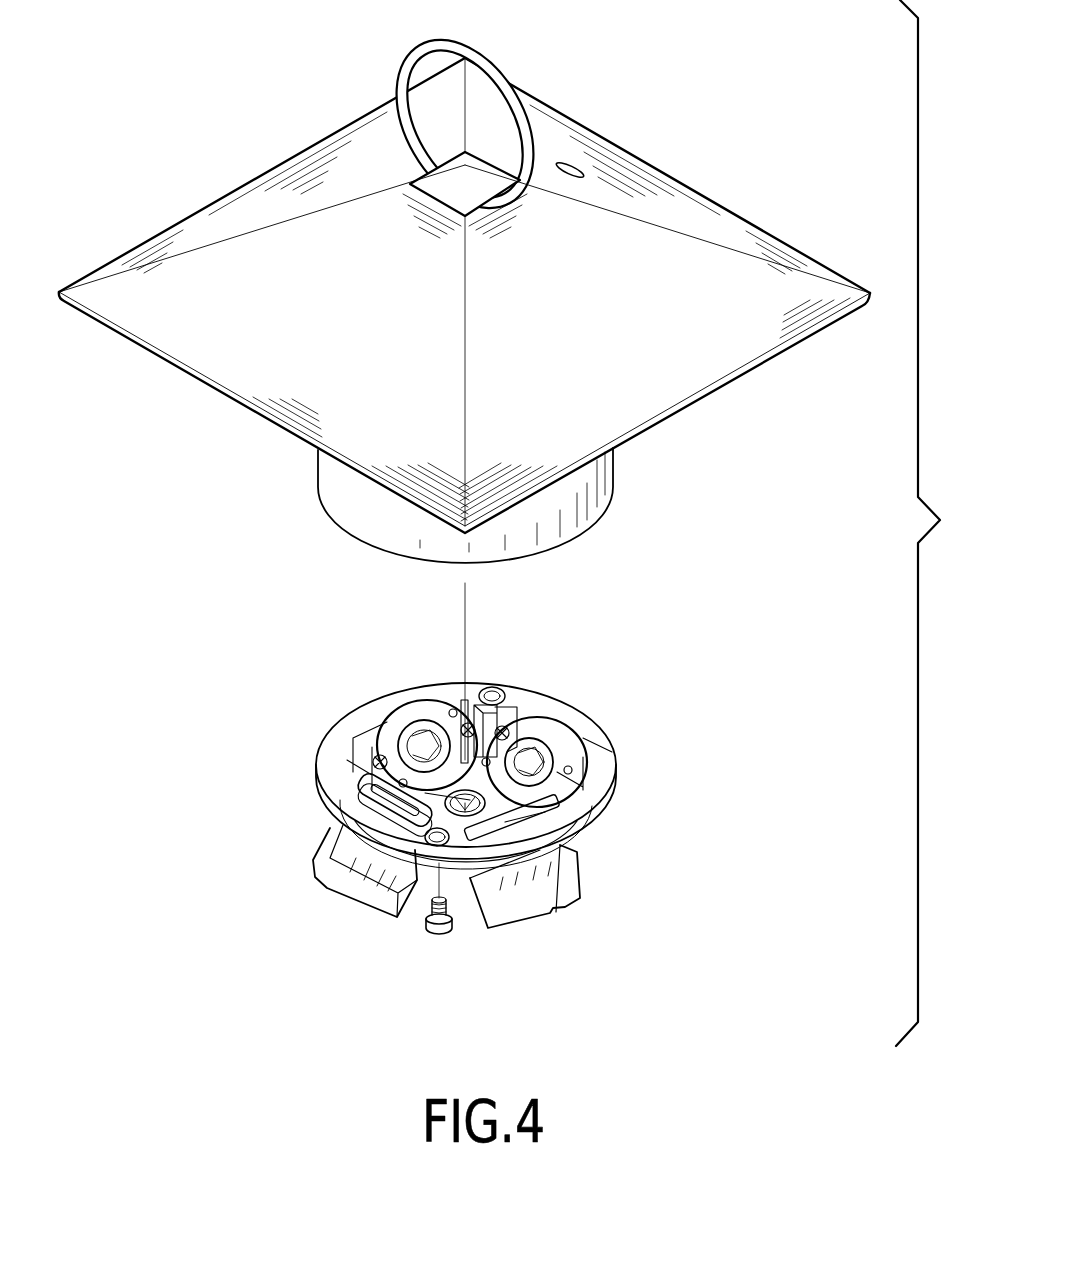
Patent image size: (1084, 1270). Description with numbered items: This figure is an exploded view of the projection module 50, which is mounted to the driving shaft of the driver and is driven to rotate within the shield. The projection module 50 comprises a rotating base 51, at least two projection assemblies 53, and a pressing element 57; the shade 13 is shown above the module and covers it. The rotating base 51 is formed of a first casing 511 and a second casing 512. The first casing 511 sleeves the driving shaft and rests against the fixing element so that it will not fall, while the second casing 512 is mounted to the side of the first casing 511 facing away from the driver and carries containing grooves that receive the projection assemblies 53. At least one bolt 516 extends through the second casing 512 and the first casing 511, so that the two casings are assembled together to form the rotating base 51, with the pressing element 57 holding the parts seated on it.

The lamp shade 13 is at (738, 161).
The projection module 50 is at (464, 507).
The rotating base 51 is at (731, 616).
The first casing 511 is at (624, 503).
The second casing 512 is at (482, 773).
The bolt 516 is at (444, 934).
The projection assembly 53 is at (591, 921).
The pressing element 57 is at (443, 797).